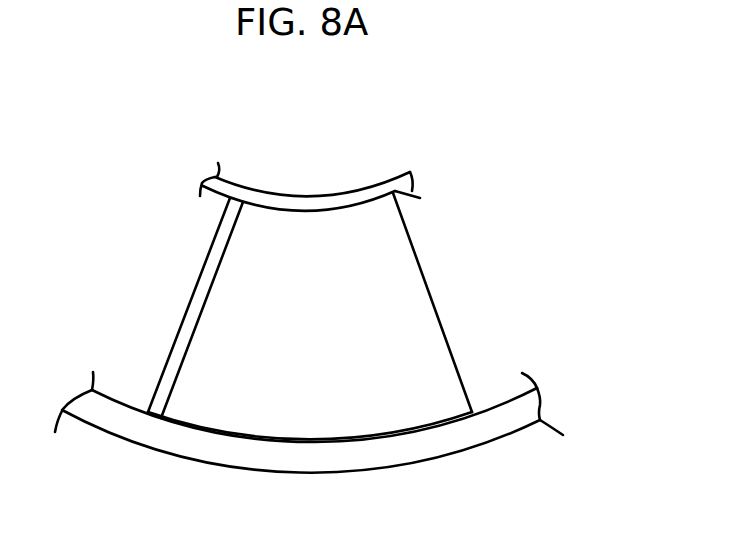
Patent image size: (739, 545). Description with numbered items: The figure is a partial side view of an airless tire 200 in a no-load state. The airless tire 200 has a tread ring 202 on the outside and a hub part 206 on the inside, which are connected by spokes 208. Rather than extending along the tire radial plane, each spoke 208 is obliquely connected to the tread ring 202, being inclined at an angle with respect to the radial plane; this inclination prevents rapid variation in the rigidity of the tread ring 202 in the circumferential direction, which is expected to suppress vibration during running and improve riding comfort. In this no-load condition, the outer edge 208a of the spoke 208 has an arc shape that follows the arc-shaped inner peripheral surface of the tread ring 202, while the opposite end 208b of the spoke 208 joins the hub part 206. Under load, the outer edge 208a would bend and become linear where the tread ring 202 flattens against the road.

The airless tire 200 is at (514, 248).
The tread ring 202 is at (515, 418).
The hub part 206 is at (403, 193).
The spoke 208 is at (354, 313).
The outer edge 208a is at (316, 443).
The upper end of connecting member 208b is at (289, 205).